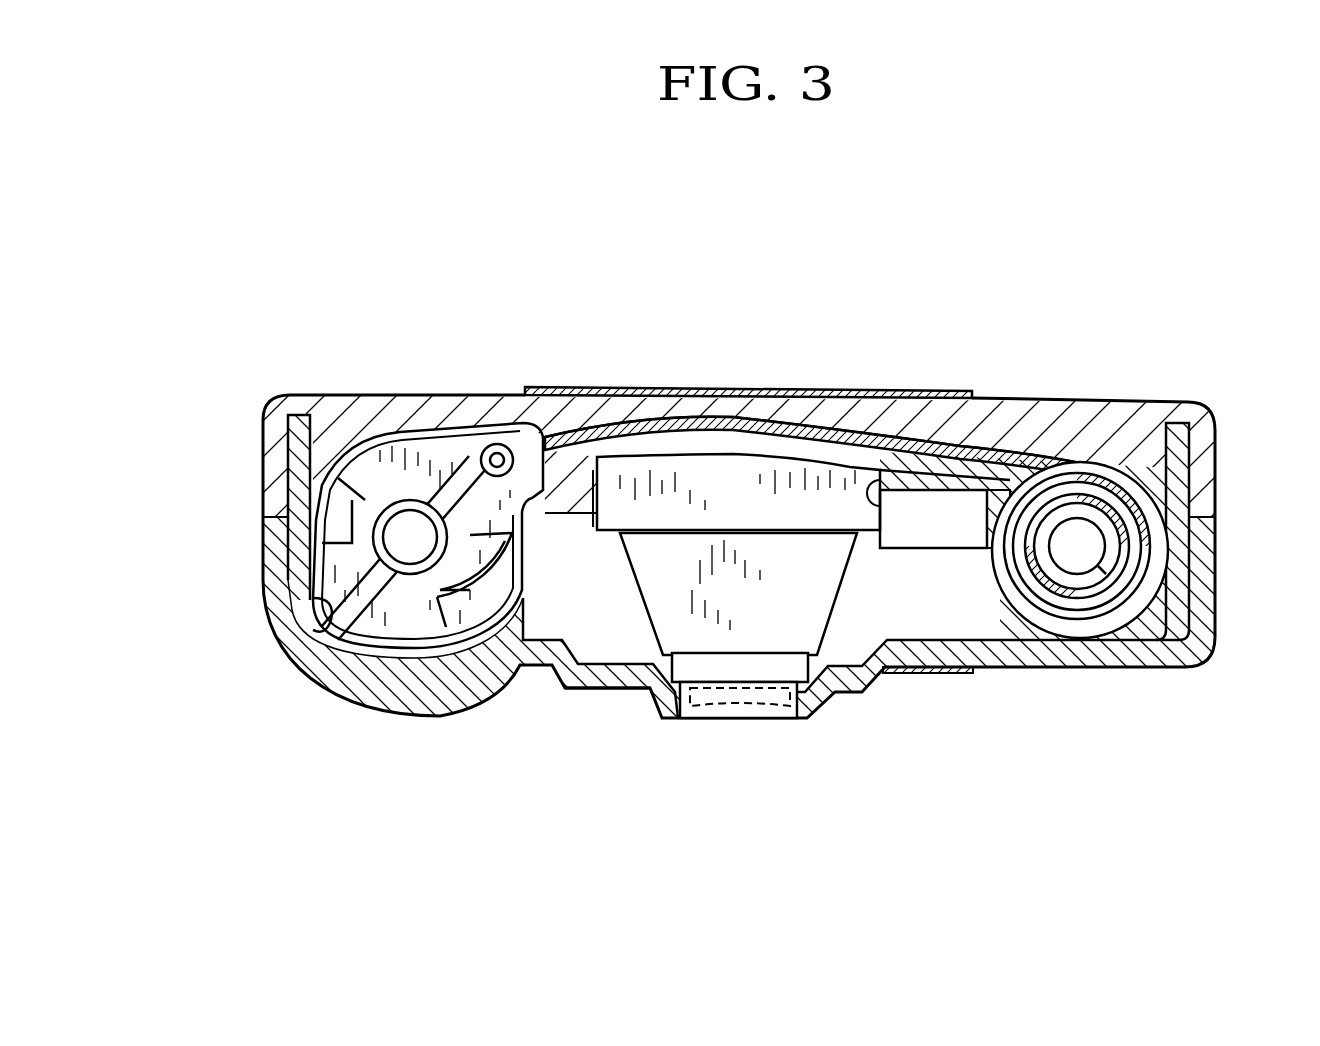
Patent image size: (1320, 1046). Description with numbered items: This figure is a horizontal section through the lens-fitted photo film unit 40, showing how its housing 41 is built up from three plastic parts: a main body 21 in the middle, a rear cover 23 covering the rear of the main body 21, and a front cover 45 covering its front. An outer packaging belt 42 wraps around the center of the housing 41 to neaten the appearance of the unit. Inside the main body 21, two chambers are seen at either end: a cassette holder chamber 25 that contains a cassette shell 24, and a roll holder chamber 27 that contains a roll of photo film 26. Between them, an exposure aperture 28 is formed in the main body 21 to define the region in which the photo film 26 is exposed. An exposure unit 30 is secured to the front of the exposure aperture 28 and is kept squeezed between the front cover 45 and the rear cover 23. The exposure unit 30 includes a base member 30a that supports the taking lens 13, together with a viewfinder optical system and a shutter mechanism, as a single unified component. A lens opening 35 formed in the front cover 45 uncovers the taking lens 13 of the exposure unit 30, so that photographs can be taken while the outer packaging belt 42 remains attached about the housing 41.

The lens-fitted photo film unit 40 is at (1022, 306).
The housing 41 is at (1214, 403).
The rear cover 23 is at (337, 394).
The outer packaging belt 42 is at (786, 388).
The photo film 26 is at (1104, 464).
The roll holder chamber 27 is at (1074, 560).
The main body 21 is at (288, 462).
The cassette shell 24 is at (430, 445).
The cassette holder chamber 25 is at (331, 628).
The exposure unit 30 is at (843, 602).
The base member 30a is at (672, 598).
The exposure aperture 28 is at (876, 498).
The lens opening 35 is at (690, 720).
The taking lens 13 is at (784, 710).
The front cover 45 is at (588, 690).